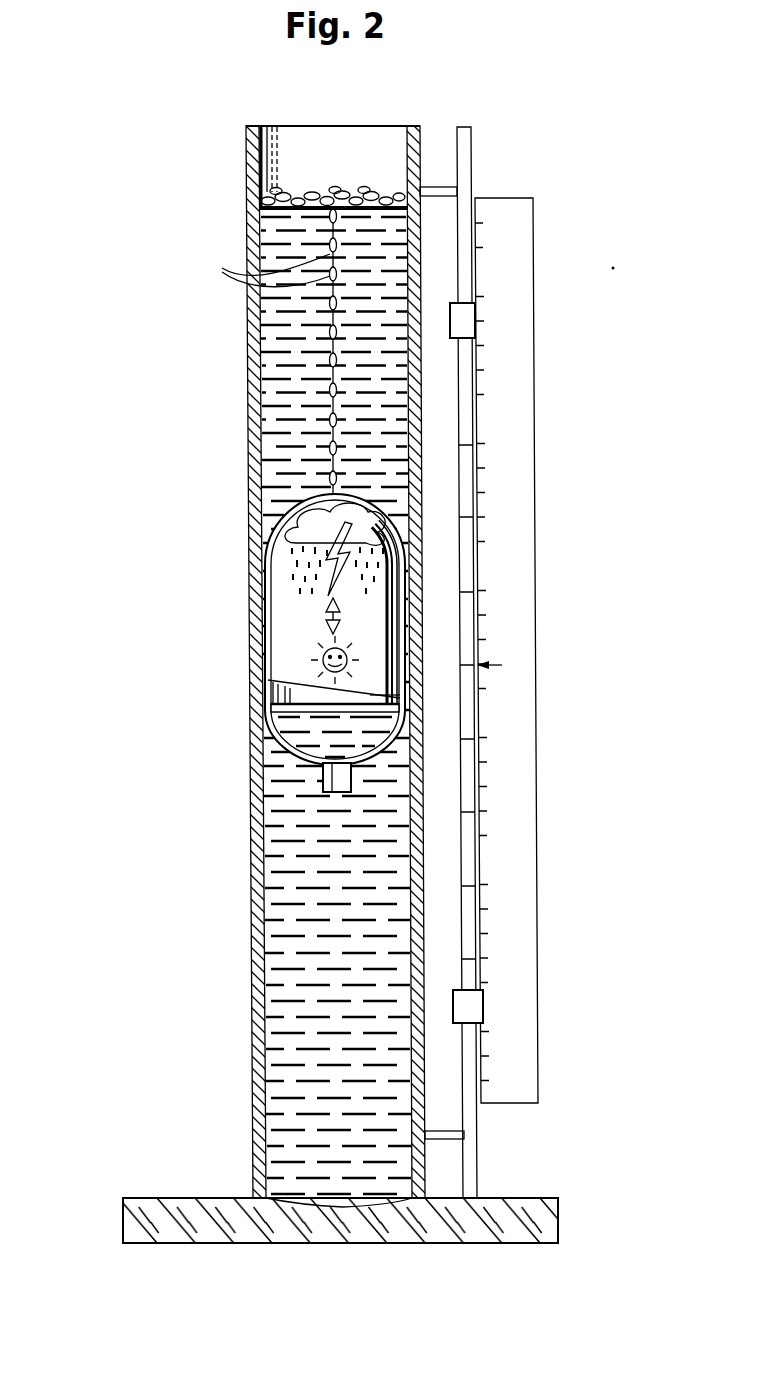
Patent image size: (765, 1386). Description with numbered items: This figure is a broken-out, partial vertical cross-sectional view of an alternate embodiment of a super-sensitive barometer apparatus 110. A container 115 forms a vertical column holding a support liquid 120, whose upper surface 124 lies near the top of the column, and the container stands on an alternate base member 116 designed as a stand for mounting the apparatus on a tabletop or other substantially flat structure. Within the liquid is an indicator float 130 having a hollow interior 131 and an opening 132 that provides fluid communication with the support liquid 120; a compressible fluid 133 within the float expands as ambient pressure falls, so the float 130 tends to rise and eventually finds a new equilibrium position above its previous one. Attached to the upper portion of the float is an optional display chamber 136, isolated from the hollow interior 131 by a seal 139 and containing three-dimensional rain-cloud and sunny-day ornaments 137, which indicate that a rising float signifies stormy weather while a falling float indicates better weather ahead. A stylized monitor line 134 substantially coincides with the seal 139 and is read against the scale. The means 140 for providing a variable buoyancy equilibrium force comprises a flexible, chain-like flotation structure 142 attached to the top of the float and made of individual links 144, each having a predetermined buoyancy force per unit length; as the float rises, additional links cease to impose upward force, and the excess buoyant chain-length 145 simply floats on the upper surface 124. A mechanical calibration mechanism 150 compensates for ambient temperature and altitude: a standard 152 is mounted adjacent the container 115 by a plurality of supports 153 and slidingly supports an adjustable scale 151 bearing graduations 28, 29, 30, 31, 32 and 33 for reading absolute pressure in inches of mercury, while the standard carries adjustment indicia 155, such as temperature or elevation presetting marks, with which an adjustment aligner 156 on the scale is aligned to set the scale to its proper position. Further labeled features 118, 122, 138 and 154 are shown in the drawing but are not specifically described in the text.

The apparatus 110 is at (328, 644).
The container 115 is at (258, 318).
The base member 116 is at (168, 1205).
The open top rim of column 118 is at (252, 125).
The support liquid 120 is at (282, 391).
The bottom of column 122 is at (320, 1203).
The upper surface 124 is at (400, 193).
The indicator float 130 is at (386, 648).
The hollow interior 131 is at (402, 730).
The opening 132 is at (333, 792).
The compressible fluid 133 is at (285, 752).
The monitor line 134 is at (400, 695).
The display chamber 136 is at (262, 600).
The ornamental figures 137 is at (290, 578).
The inner bulb wall 138 is at (266, 645).
The seal 139 is at (285, 705).
The means for providing a variable buoyancy equilibrium force 140 is at (259, 351).
The flexible flotation structure 142 is at (330, 420).
The links 144 is at (255, 269).
The excess buoyant chain-length 145 is at (320, 188).
The mechanical calibration mechanism 150 is at (536, 639).
The adjustable scale 151 is at (534, 650).
The standard 152 is at (478, 1168).
The supports 153 is at (440, 186).
The clamp 154 is at (463, 321).
The adjustment indicia 155 is at (465, 447).
The adjustment aligner 156 is at (502, 665).
The scale graduation 28 is at (480, 1007).
The scale graduation 29 is at (479, 860).
The scale graduation 30 is at (478, 713).
The scale graduation 31 is at (477, 566).
The scale graduation 32 is at (476, 419).
The scale graduation 33 is at (476, 272).